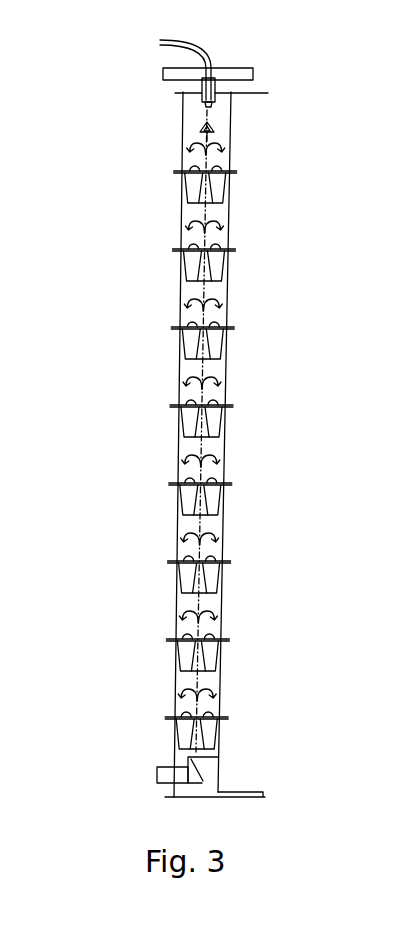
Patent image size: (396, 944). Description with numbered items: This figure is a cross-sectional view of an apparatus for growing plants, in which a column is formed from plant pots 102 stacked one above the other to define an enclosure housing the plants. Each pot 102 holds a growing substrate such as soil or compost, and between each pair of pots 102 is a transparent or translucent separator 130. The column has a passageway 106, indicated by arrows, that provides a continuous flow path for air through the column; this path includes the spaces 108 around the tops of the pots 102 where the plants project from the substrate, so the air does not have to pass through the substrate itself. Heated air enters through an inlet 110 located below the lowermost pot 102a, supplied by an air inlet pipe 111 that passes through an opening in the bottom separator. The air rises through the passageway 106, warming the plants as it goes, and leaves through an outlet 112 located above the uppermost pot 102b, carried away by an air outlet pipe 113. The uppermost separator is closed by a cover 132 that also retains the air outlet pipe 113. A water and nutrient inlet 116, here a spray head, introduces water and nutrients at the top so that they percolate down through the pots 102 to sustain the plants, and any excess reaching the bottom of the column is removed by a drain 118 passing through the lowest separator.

The plant pot 102 is at (224, 343).
The lowermost pot 102a is at (224, 718).
The uppermost pot 102b is at (236, 172).
The passageway 106 is at (205, 287).
The spaces 108 is at (175, 473).
The inlet 110 is at (200, 757).
The air inlet pipe 111 is at (165, 782).
The outlet 112 is at (216, 93).
The air outlet pipe 113 is at (232, 68).
The water and nutrient inlet 116 is at (203, 108).
The drain 118 is at (250, 792).
The separator 130 is at (176, 303).
The cover 132 is at (238, 100).